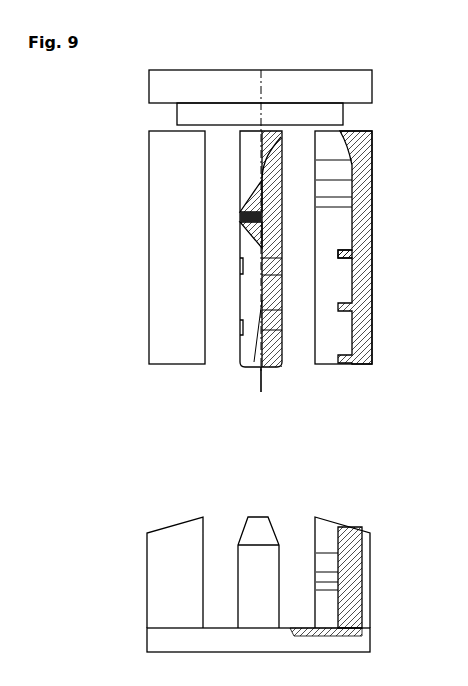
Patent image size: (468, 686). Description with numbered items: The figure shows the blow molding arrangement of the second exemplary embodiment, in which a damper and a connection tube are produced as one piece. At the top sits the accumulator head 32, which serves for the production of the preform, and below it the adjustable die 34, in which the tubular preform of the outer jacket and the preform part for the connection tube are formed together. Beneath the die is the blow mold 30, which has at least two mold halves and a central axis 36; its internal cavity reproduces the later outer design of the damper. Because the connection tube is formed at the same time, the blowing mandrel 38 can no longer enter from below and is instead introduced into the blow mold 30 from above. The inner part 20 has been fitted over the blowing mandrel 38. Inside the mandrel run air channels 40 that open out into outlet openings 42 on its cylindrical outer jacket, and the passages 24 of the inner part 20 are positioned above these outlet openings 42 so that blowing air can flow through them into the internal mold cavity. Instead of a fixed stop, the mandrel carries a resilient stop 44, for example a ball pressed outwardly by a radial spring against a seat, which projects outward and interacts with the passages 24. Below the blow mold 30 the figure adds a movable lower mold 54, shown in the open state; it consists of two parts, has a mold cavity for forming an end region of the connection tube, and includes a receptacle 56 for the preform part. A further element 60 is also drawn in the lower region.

The inner part 20 is at (181, 249).
The passages 24 is at (272, 217).
The blow mold 30 is at (358, 247).
The accumulator head 32 is at (345, 91).
The die 34 is at (330, 118).
The central axis 36 is at (262, 70).
The blowing mandrel 38 is at (247, 171).
The air channels 40 is at (261, 398).
The outlet openings 42 is at (265, 265).
The stop 44 is at (255, 213).
The movable lower mold 54 is at (264, 575).
The receptacle 56 is at (257, 524).
The die insert 60 is at (360, 551).